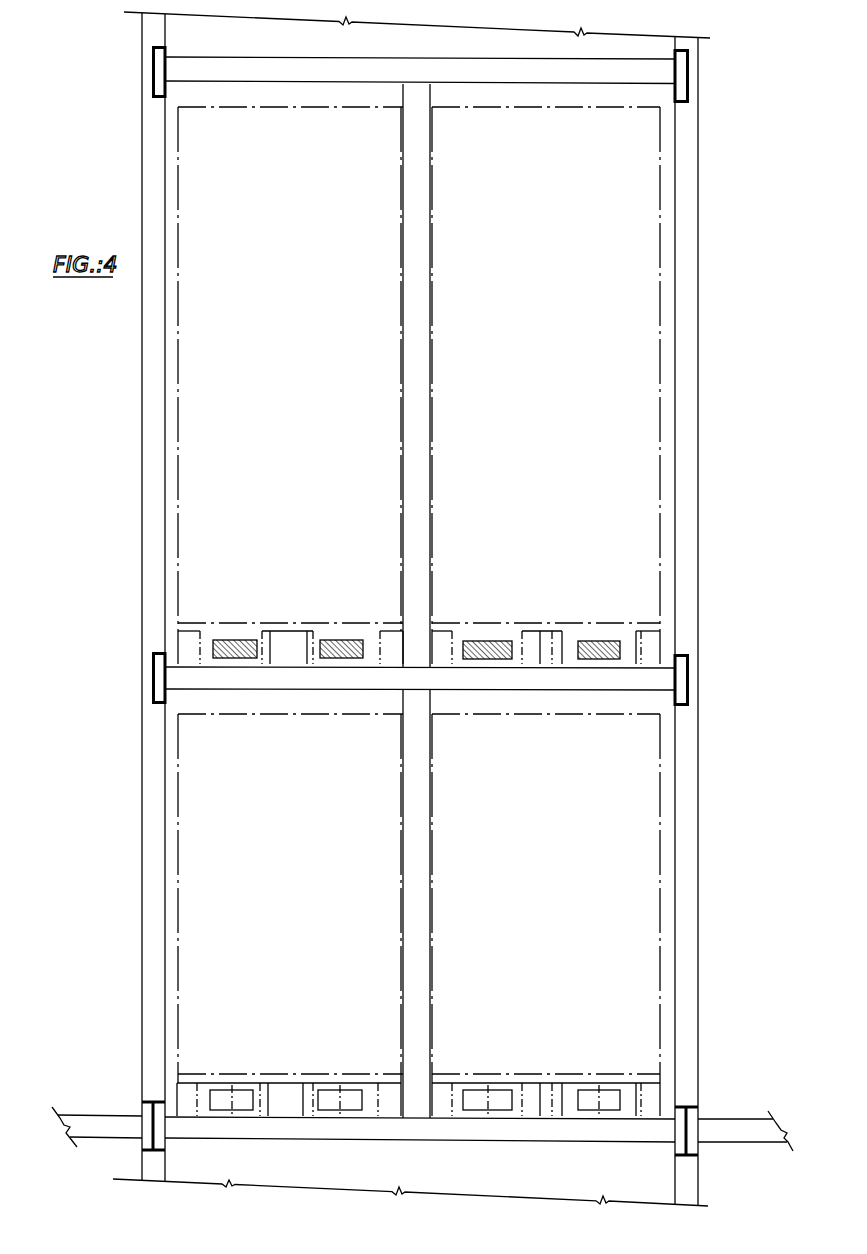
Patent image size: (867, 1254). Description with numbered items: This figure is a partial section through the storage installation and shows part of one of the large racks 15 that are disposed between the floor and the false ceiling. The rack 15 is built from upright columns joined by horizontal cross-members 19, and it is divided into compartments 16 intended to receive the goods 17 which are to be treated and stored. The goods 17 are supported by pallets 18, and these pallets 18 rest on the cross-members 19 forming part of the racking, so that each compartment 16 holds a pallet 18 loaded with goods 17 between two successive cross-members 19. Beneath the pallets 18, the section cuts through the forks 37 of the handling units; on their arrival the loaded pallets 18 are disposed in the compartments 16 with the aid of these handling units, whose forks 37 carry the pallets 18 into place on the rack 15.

The rack 15 is at (688, 362).
The compartment 16 is at (669, 507).
The goods 17 is at (637, 340).
The pallet 18 is at (650, 645).
The cross-member 19 is at (366, 680).
The fork 37 is at (240, 648).